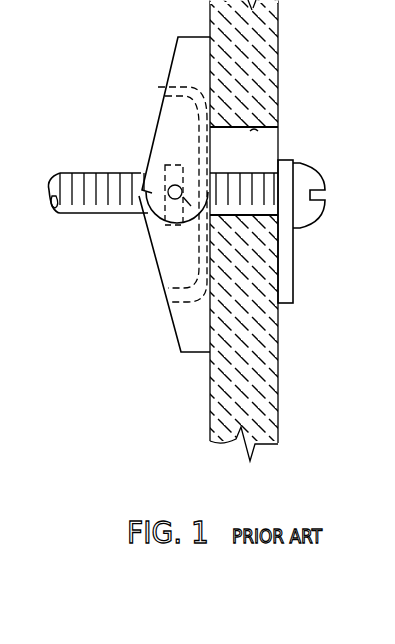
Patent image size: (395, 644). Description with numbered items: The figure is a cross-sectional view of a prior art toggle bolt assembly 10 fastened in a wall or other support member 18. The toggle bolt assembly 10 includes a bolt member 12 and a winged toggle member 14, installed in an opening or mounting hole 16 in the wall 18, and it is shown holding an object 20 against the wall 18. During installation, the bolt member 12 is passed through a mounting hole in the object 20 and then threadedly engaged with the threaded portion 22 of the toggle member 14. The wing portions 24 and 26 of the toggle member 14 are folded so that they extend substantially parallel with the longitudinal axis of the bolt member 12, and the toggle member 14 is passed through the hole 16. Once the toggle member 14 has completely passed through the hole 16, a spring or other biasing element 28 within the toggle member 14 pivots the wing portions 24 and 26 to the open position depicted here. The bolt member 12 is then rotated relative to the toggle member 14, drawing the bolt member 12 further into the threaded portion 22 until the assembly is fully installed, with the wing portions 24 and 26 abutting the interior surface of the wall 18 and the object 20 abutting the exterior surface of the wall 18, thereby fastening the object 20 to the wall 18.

The toggle bolt assembly 10 is at (287, 154).
The bolt member 12 is at (302, 227).
The winged toggle member 14 is at (167, 285).
The mounting hole 16 is at (262, 128).
The wall 18 is at (272, 39).
The object 20 is at (293, 258).
The threaded portion 22 is at (167, 163).
The wing portion 24 is at (178, 51).
The wing portion 26 is at (177, 333).
The spring 28 is at (165, 93).